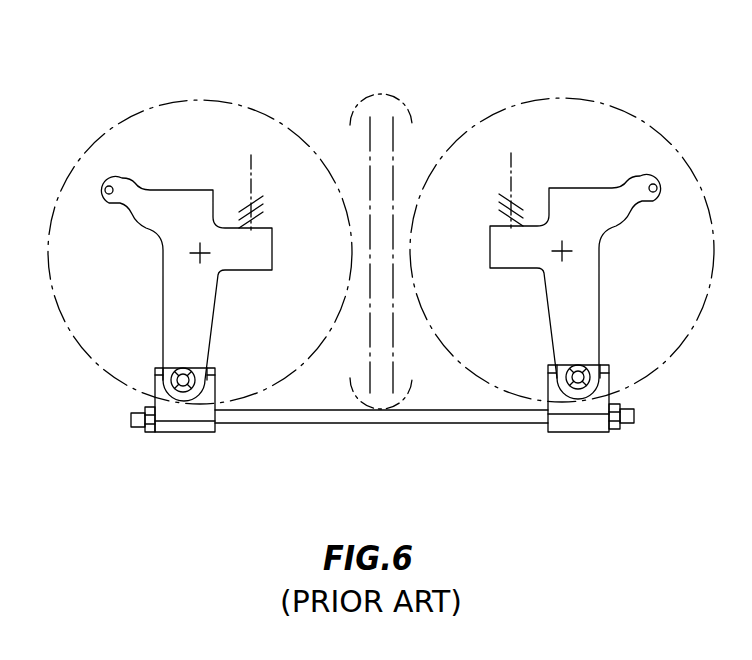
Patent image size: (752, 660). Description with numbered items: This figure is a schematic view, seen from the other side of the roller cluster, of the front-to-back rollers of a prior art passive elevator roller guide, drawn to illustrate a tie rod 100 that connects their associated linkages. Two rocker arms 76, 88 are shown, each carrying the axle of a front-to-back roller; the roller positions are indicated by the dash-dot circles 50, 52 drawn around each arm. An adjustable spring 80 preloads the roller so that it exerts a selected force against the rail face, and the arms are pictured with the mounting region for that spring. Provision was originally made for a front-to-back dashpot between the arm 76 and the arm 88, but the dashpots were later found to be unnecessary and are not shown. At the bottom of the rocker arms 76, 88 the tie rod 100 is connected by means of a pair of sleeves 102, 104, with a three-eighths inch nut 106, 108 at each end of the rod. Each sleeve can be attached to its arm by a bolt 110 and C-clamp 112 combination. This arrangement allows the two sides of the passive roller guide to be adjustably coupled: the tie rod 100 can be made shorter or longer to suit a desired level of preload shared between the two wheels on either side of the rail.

The left wheel pivot circle 50 is at (283, 110).
The right wheel pivot circle 52 is at (618, 102).
The rocker arm 76 is at (150, 185).
The adjustable spring 80 is at (273, 205).
The arm 88 is at (580, 187).
The tie rod 100 is at (468, 428).
The sleeve 102 is at (153, 383).
The sleeve 104 is at (612, 378).
The nut 106 is at (146, 433).
The nut 108 is at (625, 430).
The bolt 110 is at (157, 371).
The C-clamp 112 is at (198, 368).